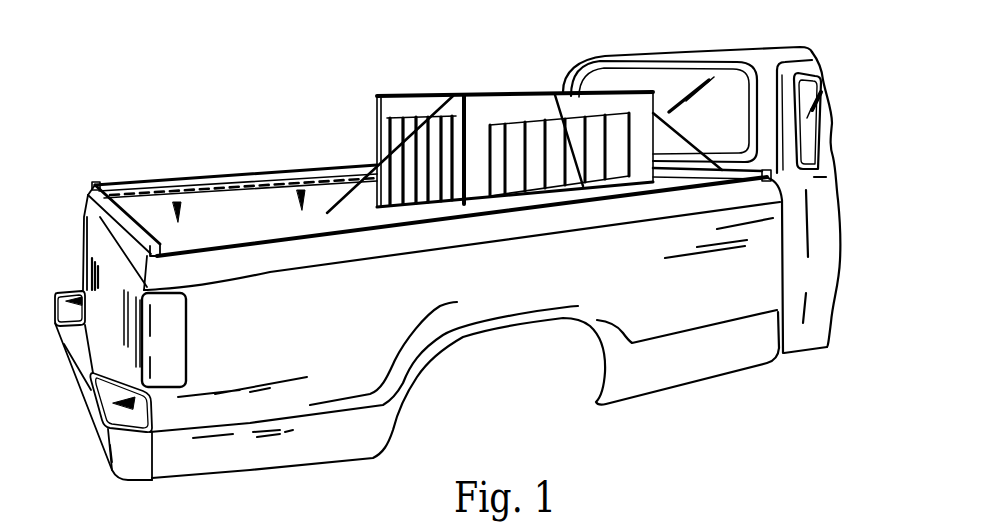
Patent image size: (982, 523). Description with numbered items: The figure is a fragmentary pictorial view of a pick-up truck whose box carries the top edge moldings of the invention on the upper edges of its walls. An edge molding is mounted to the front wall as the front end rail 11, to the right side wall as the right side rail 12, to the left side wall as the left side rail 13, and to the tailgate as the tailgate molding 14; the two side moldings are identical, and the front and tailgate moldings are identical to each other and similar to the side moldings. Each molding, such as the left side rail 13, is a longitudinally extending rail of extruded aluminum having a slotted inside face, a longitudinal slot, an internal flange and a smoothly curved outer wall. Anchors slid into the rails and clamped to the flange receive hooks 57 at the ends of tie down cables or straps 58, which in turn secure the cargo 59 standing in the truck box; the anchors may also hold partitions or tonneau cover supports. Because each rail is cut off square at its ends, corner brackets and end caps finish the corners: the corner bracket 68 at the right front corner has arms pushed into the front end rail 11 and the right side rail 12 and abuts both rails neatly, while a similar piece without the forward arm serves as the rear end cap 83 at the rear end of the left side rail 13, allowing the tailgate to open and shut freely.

The front end rail 11 is at (682, 172).
The right side rail 12 is at (247, 236).
The left side rail 13 is at (167, 183).
The tailgate molding 14 is at (123, 215).
The hook 57 is at (273, 181).
The tie down cable or strap 58 is at (335, 137).
The cargo 59 is at (503, 103).
The corner bracket 68 is at (778, 174).
The rear end cap 83 is at (95, 184).